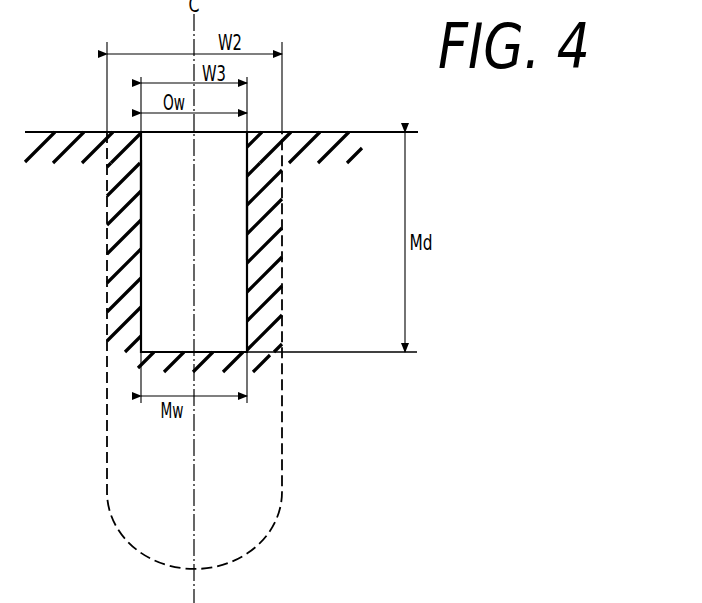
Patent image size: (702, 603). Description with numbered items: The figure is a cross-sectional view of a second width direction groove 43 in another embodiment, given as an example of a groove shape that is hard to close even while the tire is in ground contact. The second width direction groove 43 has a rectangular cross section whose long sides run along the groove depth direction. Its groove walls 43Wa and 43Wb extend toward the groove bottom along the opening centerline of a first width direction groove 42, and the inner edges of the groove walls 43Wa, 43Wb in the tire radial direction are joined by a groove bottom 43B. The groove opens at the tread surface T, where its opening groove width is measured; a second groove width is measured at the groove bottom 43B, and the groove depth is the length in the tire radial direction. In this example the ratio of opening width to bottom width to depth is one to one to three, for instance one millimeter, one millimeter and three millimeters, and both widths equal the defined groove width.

The tread surface T is at (67, 131).
The first width direction groove 42 is at (181, 475).
The second width direction groove 43 is at (181, 246).
The groove wall 43Wa is at (142, 203).
The groove wall 43Wb is at (247, 217).
The groove bottom 43B is at (207, 352).